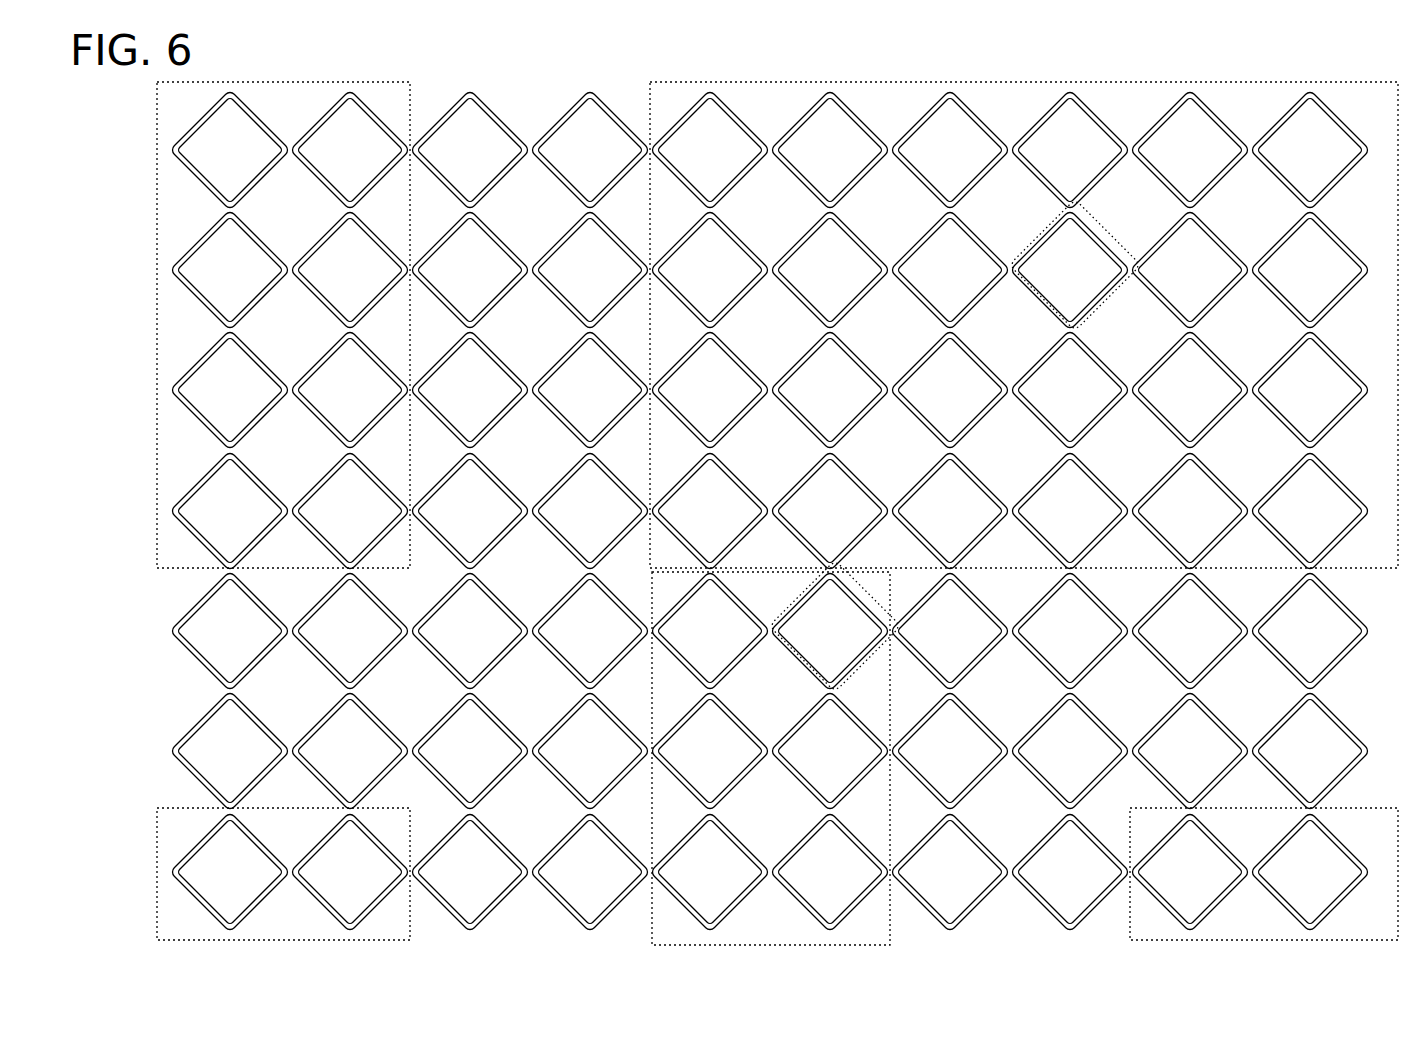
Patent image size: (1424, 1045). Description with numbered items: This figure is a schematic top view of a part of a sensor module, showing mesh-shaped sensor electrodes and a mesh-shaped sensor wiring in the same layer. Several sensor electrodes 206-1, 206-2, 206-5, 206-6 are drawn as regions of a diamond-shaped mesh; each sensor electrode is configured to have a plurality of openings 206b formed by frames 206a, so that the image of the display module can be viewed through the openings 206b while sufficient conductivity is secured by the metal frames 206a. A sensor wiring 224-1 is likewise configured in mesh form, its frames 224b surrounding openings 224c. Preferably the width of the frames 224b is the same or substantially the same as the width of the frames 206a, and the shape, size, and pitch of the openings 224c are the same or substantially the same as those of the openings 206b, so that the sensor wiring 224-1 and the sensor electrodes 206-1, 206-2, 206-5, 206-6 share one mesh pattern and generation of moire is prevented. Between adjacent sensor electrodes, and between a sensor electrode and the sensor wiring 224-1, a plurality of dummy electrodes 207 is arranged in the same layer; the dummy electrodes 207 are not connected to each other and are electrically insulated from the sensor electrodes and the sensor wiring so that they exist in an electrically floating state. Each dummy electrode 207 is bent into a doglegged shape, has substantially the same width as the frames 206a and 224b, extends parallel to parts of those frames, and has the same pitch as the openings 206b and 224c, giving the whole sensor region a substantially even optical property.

The sensor electrode 206-1 is at (650, 82).
The sensor electrode 206-2 is at (1393, 808).
The sensor electrode 206-5 is at (155, 205).
The sensor electrode 206-6 is at (155, 877).
The frame 206a is at (1088, 250).
The opening 206b is at (977, 280).
The dummy electrode 207 is at (176, 636).
The sensor wiring 224-1 is at (652, 692).
The frame 224b is at (848, 610).
The opening 224c is at (736, 642).